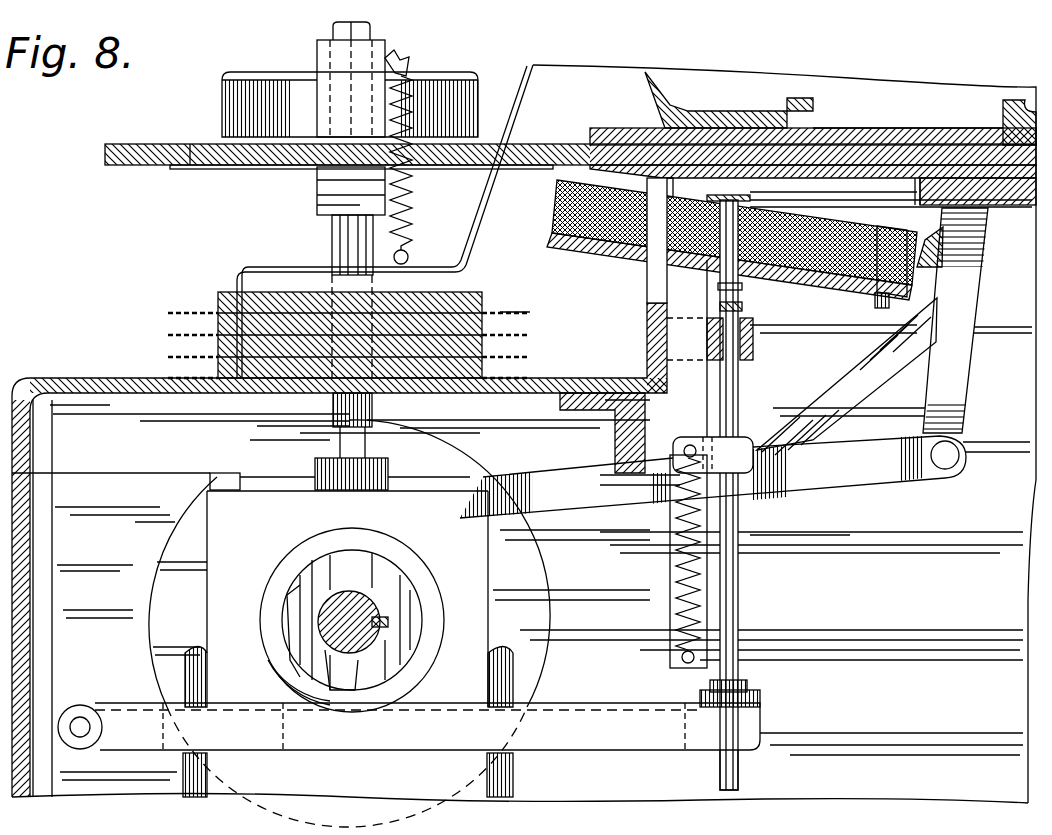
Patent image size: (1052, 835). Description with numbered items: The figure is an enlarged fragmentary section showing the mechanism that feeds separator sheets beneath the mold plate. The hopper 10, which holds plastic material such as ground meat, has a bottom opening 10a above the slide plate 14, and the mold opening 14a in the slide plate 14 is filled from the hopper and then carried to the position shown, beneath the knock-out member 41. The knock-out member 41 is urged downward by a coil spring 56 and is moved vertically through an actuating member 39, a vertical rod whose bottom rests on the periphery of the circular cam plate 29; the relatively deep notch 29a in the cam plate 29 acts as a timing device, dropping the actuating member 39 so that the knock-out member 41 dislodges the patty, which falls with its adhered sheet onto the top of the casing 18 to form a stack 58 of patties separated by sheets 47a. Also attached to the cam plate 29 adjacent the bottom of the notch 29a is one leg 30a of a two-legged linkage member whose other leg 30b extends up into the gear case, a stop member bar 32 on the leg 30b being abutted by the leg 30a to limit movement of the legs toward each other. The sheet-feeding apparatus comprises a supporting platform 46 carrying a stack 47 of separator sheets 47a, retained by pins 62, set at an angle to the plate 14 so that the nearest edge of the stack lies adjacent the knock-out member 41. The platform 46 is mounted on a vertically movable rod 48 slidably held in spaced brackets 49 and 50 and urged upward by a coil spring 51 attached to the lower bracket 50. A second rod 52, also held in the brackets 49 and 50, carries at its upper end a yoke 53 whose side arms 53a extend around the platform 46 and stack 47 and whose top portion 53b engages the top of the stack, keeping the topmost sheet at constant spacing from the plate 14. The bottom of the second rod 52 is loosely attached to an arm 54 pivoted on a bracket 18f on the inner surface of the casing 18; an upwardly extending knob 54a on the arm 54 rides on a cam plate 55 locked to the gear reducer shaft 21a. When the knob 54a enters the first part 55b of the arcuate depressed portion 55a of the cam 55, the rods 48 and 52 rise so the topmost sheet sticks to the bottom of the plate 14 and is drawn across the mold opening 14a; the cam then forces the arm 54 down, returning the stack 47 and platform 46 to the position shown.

The hopper 10 is at (663, 85).
The bottom opening 10a is at (815, 115).
The slide plate 14 is at (105, 151).
The mold opening 14a is at (207, 145).
The separator sheet 47a is at (184, 169).
The knock-out member 41 is at (453, 93).
The coil spring 56 is at (413, 227).
The actuating member 39 is at (347, 242).
The stack of patties 58 is at (213, 303).
The casing 18 is at (73, 378).
The stack of separator sheets 47 is at (557, 207).
The supporting platform 46 is at (583, 241).
The vertically movable rod 48 is at (687, 292).
The second rod 52 is at (738, 570).
The top portion 53b is at (732, 195).
The side arms 53a is at (742, 286).
The yoke-shaped member 53 is at (742, 306).
The pins 62 is at (875, 298).
The bracket 49 is at (753, 341).
The leg 30a is at (877, 467).
The lower bracket 50 is at (763, 483).
The leg 30b is at (950, 373).
The stop member bar 32 is at (847, 376).
The coil spring 51 is at (672, 582).
The cam plate 29 is at (533, 588).
The notch 29a is at (345, 460).
The first part of depressed portion 55b is at (267, 600).
The cam plate 55 is at (400, 645).
The arcuate depressed portion 55a is at (300, 672).
The gear reducer shaft 21a is at (372, 607).
The knob 54a is at (345, 693).
The arm 54 is at (597, 733).
The bracket 18f is at (76, 705).